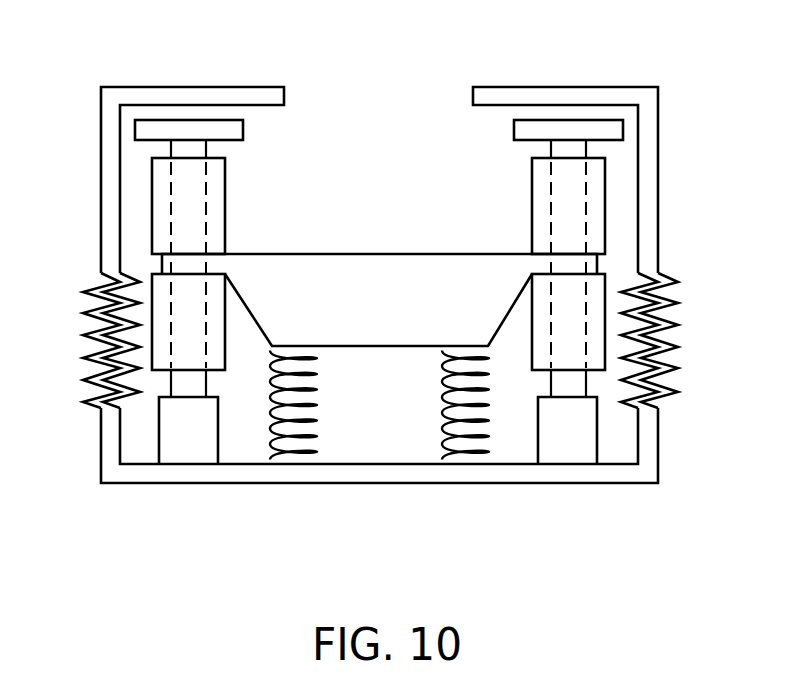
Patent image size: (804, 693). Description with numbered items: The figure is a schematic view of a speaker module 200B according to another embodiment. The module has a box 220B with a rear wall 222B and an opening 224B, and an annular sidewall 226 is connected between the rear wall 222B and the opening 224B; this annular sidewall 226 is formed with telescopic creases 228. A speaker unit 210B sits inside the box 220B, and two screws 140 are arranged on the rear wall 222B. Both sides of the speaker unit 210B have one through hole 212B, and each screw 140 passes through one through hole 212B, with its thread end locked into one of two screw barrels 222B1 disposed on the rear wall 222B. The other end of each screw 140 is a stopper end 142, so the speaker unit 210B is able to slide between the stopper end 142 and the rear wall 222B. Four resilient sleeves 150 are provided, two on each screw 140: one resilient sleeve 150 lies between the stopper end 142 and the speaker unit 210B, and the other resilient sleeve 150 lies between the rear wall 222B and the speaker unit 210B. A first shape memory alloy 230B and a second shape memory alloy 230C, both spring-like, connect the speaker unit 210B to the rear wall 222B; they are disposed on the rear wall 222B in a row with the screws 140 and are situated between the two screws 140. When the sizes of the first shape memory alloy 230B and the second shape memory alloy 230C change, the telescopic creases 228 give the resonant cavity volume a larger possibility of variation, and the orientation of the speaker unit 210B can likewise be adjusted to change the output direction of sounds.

The speaker module 200B is at (753, 598).
The opening 224B is at (380, 123).
The annular sidewall 226 is at (108, 188).
The box 220B is at (570, 94).
The telescopic creases 228 is at (95, 335).
The through hole 212B is at (571, 260).
The rear wall 222B is at (505, 473).
The screw barrel 222B1 is at (572, 445).
The speaker unit 210B is at (394, 283).
The resilient sleeve 150 is at (598, 207).
The stopper end 142 is at (617, 133).
The screw 140 is at (577, 386).
The first shape memory alloy 230B is at (277, 455).
The second shape memory alloy 230C is at (443, 455).